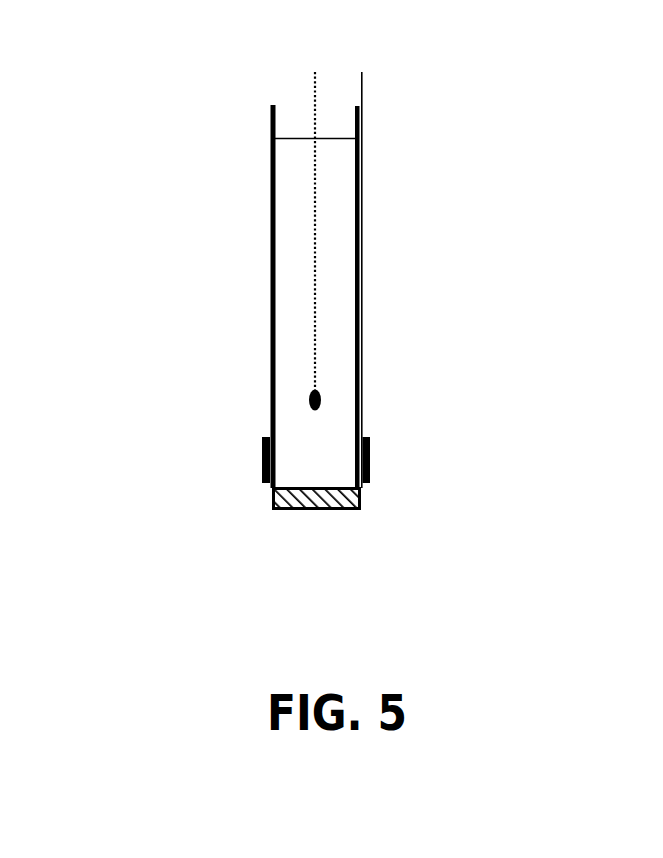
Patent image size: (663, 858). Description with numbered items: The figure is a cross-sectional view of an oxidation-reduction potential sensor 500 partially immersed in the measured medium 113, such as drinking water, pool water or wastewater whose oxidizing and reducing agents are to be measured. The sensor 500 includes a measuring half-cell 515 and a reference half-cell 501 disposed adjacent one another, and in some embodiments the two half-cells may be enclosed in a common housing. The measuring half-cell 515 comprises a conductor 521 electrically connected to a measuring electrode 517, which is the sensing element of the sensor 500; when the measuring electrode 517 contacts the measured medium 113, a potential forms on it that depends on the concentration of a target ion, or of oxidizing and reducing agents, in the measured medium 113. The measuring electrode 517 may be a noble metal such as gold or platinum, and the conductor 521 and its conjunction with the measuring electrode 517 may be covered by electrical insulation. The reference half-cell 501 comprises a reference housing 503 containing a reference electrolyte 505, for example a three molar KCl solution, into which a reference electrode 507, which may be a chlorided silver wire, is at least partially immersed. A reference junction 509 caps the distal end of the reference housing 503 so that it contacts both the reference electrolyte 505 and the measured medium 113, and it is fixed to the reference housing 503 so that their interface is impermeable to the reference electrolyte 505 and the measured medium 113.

The oxidation-reduction potential sensor 500 is at (203, 97).
The reference half-cell 501 is at (265, 172).
The reference housing 503 is at (270, 242).
The reference electrolyte 505 is at (292, 305).
The reference electrode 507 is at (313, 340).
The reference junction 509 is at (288, 508).
The measuring half-cell 515 is at (366, 332).
The measuring electrode 517 is at (367, 465).
The conductor 521 is at (362, 210).
The measured medium 113 is at (356, 550).